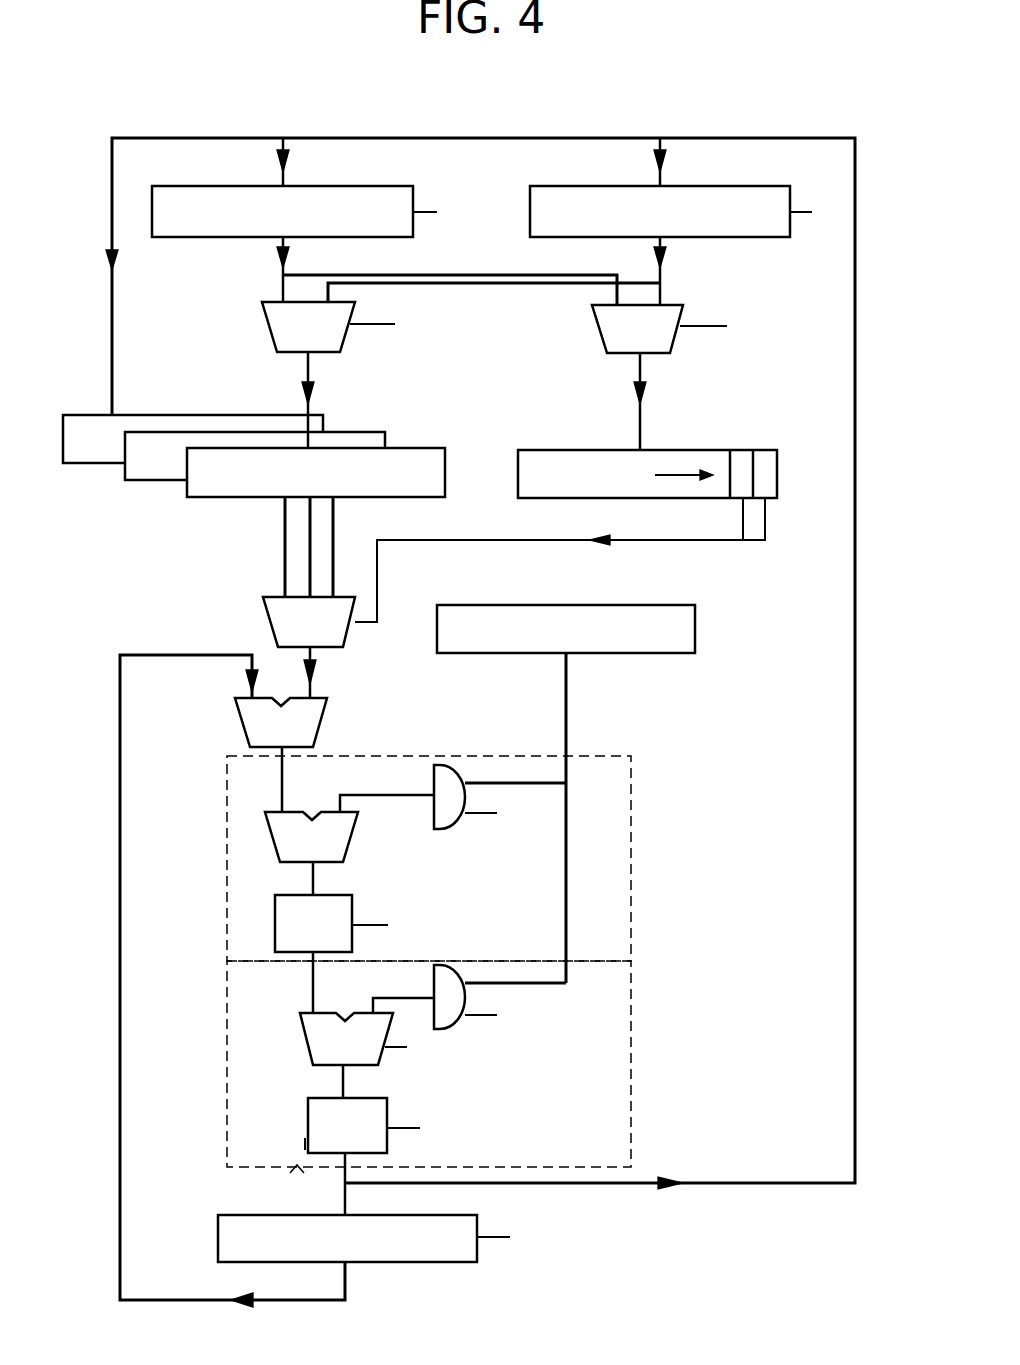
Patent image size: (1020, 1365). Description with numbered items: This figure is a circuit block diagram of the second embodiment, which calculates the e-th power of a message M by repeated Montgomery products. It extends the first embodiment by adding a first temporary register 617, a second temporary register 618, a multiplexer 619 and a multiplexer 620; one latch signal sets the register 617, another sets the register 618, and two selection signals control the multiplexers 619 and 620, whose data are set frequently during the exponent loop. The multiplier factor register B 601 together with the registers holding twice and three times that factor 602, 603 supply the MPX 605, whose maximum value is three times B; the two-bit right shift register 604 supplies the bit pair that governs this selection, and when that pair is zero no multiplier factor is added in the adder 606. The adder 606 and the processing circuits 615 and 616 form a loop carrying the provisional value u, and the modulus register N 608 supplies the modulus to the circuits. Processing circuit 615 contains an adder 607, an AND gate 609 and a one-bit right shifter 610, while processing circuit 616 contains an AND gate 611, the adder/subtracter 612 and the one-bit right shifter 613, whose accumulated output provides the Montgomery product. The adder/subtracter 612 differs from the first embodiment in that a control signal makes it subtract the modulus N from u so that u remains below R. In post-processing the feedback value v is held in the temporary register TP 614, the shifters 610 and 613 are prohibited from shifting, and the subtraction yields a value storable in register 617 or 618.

The register B 601 is at (225, 498).
The register 2B 602 is at (362, 432).
The register 3B 603 is at (215, 415).
The two-bit right shift register 604 is at (556, 450).
The MPX 605 is at (263, 620).
The adder 606 is at (240, 729).
The adder 607 is at (265, 838).
The register N 608 is at (632, 655).
The AND gate 609 is at (442, 765).
The halving circuit (2^-1) 610 is at (275, 925).
The AND gate 611 is at (462, 1031).
The adder/subtracter 612 is at (300, 1042).
The one-bit right shifter 613 is at (308, 1130).
The temporary register TP 614 is at (463, 1263).
The processing circuit 615 is at (631, 843).
The processing circuit 616 is at (631, 1030).
The T1 register 617 is at (172, 238).
The T2 register 618 is at (530, 200).
The multiplexer 619 is at (262, 323).
The multiplexer 620 is at (592, 326).